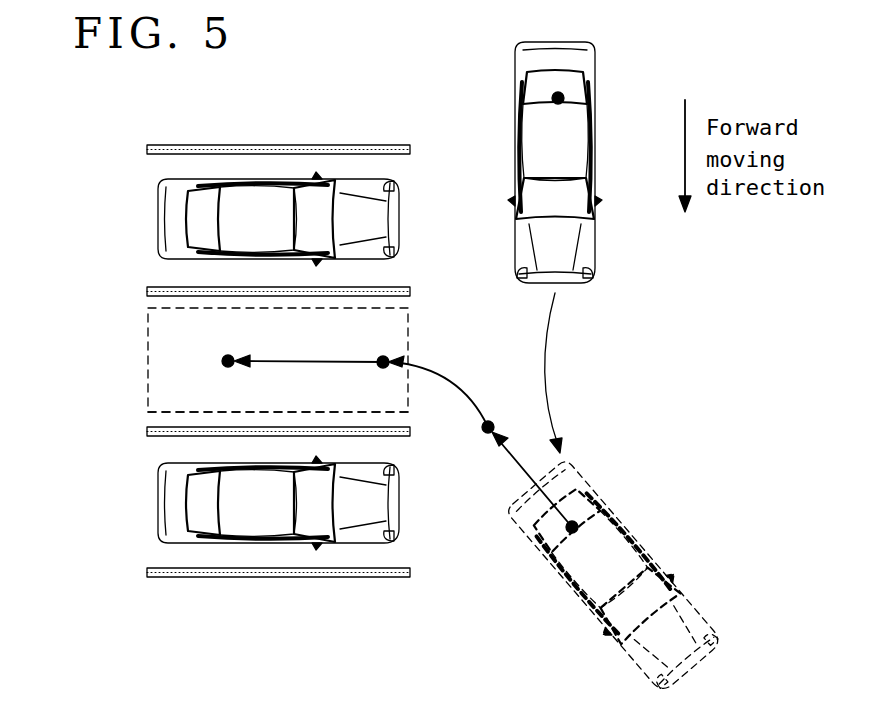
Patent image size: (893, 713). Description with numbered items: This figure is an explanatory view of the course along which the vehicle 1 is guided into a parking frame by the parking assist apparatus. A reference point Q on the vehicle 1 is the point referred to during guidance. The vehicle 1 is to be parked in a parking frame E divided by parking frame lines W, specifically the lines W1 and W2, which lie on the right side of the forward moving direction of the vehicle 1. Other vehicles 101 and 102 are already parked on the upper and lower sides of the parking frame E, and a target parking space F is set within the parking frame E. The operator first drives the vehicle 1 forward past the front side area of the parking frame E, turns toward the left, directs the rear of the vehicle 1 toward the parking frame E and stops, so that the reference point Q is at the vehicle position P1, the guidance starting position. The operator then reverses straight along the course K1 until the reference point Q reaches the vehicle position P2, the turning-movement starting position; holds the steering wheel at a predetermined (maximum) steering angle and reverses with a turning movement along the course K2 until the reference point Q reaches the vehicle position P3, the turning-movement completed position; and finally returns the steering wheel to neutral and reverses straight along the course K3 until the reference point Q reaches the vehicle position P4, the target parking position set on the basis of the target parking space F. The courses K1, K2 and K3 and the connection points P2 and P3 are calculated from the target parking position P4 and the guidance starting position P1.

The vehicle 1 is at (600, 84).
The other vehicle 101 is at (158, 204).
The other vehicle 102 is at (158, 504).
The parking frame lines W is at (185, 146).
The parking frame line W1 is at (158, 287).
The parking frame line W2 is at (218, 428).
The parking frame E is at (148, 348).
The target parking space F is at (148, 388).
The reference point Q is at (561, 105).
The vehicle position P1 is at (576, 521).
The vehicle position P2 is at (484, 433).
The vehicle position P3 is at (386, 360).
The vehicle position P4 is at (222, 361).
The course K1 is at (524, 479).
The course K2 is at (446, 380).
The course K3 is at (284, 354).